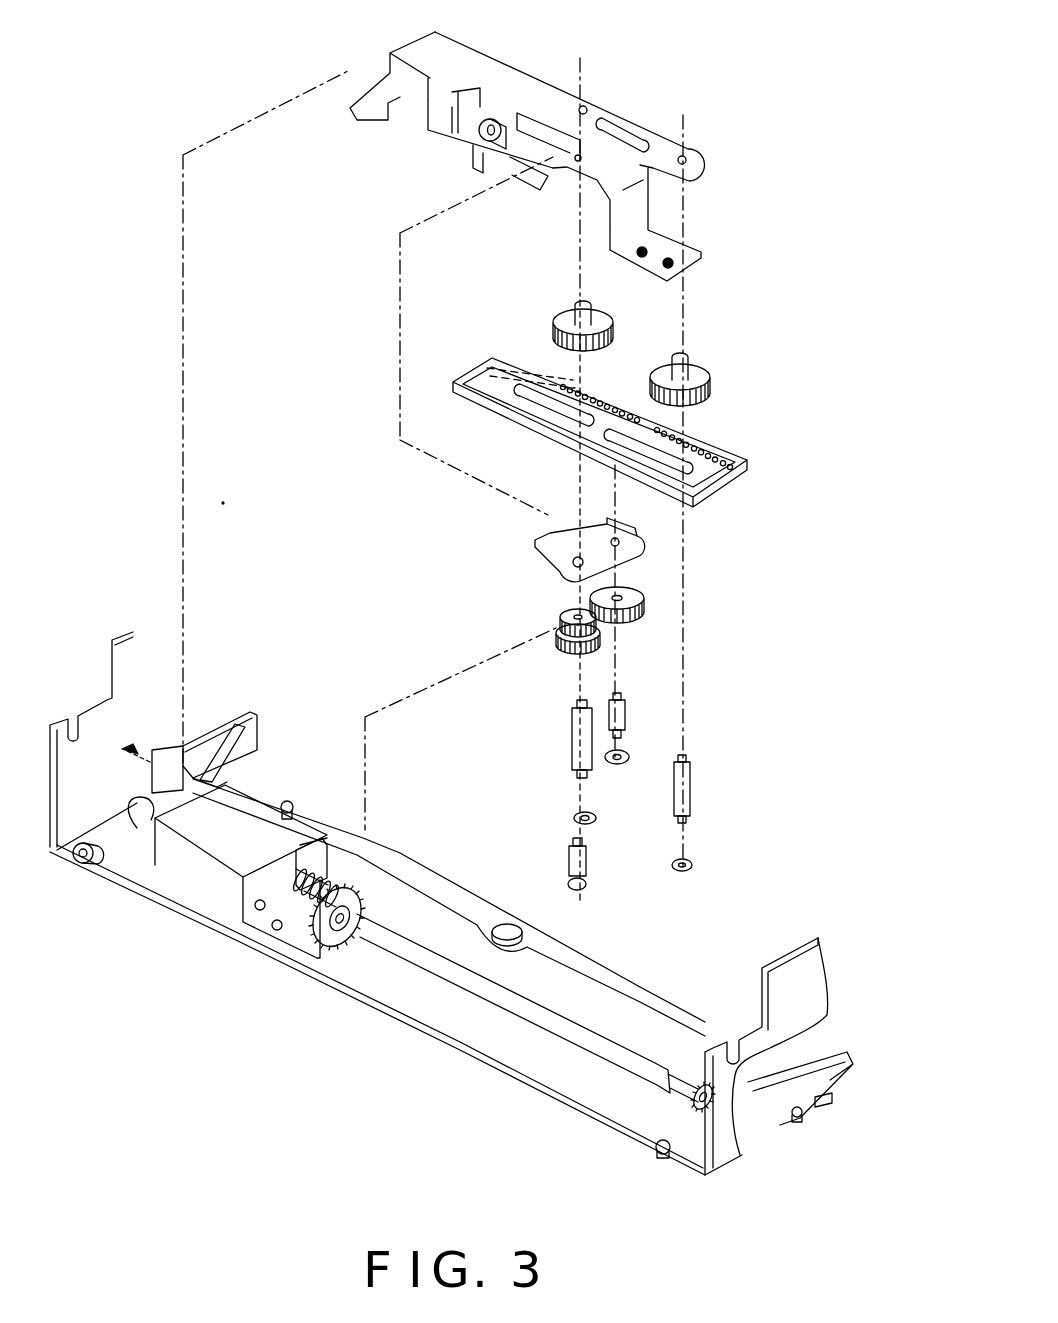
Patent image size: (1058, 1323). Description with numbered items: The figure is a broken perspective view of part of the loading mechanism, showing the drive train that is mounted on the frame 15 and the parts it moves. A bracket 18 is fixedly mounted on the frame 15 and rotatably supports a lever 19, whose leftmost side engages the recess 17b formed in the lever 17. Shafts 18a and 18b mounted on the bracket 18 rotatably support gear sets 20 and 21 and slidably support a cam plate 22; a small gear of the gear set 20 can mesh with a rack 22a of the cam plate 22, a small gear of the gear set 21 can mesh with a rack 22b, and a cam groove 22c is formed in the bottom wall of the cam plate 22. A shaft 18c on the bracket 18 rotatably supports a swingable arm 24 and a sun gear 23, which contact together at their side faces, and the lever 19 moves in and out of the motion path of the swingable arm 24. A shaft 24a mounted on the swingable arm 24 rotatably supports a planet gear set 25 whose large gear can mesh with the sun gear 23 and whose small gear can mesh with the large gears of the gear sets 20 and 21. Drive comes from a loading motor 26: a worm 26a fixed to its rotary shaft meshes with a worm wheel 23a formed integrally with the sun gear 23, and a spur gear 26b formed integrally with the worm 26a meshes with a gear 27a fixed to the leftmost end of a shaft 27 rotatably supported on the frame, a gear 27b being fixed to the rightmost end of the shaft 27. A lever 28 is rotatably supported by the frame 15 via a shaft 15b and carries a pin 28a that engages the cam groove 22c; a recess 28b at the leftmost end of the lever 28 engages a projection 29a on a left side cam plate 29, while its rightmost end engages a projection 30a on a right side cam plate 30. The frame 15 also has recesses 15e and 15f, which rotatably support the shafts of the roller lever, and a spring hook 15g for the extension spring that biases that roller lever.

The frame 15 is at (431, 903).
The shaft 15b is at (525, 930).
The recess 15e is at (80, 733).
The recess 15f is at (733, 1045).
The spring hook 15g is at (98, 866).
The lever 17 is at (191, 733).
The recess 17b is at (165, 745).
The bracket 18 is at (510, 85).
The shaft 18a is at (690, 797).
The shaft 18b is at (583, 740).
The shaft 18c is at (590, 865).
The lever 19 is at (464, 125).
The gear set 20 is at (703, 367).
The gear set 21 is at (572, 316).
The cam plate 22 is at (620, 423).
The rack 22a is at (705, 447).
The rack 22b is at (547, 413).
The cam groove 22c is at (518, 367).
The sun gear 23 is at (560, 620).
The worm wheel 23a is at (565, 646).
The swingable arm 24 is at (563, 575).
The shaft 24a is at (624, 714).
The planet gear set 25 is at (640, 598).
The loading motor 26 is at (343, 896).
The worm 26a is at (330, 880).
The spur gear 26b is at (405, 905).
The shaft 27 is at (506, 1040).
The gear 27a is at (340, 950).
The gear 27b is at (695, 1105).
The lever 28 is at (483, 977).
The pin 28a is at (292, 810).
The recess 28b is at (140, 812).
The left side cam plate 29 is at (253, 745).
The projection 29a is at (218, 780).
The right side cam plate 30 is at (833, 1067).
The projection 30a is at (830, 1112).